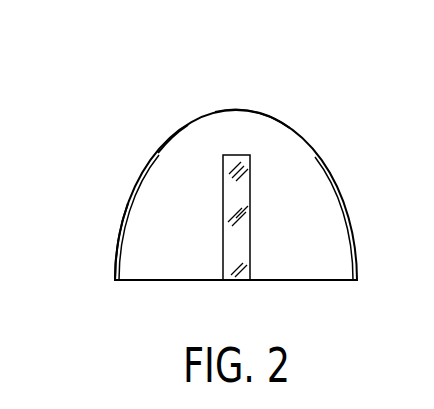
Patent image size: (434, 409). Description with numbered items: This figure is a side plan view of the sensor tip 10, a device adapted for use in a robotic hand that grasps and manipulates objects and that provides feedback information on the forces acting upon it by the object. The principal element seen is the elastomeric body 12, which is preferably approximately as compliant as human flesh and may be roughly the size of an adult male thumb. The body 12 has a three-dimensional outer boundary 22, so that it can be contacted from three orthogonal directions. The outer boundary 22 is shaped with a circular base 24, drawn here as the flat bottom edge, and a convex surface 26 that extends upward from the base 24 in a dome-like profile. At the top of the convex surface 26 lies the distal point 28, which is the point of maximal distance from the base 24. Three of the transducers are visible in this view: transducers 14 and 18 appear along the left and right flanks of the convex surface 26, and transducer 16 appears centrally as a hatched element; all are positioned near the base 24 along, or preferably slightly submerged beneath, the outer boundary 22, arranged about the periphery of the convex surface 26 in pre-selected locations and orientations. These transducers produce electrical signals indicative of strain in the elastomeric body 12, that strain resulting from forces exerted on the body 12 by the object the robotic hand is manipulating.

The sensor tip 10 is at (313, 139).
The elastomeric body 12 is at (158, 153).
The transducer 14 is at (128, 203).
The transducer 16 is at (250, 235).
The transducer 18 is at (349, 220).
The outer boundary 22 is at (188, 125).
The circular base 24 is at (157, 282).
The convex surface 26 is at (272, 118).
The distal point 28 is at (239, 110).